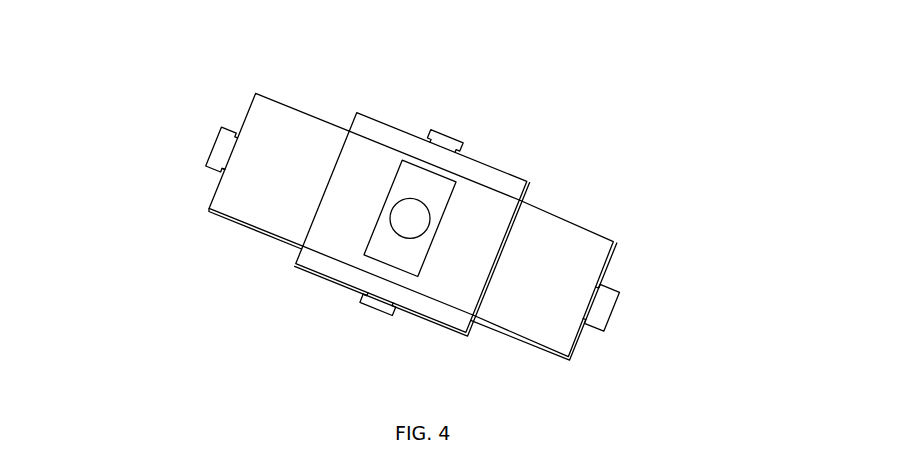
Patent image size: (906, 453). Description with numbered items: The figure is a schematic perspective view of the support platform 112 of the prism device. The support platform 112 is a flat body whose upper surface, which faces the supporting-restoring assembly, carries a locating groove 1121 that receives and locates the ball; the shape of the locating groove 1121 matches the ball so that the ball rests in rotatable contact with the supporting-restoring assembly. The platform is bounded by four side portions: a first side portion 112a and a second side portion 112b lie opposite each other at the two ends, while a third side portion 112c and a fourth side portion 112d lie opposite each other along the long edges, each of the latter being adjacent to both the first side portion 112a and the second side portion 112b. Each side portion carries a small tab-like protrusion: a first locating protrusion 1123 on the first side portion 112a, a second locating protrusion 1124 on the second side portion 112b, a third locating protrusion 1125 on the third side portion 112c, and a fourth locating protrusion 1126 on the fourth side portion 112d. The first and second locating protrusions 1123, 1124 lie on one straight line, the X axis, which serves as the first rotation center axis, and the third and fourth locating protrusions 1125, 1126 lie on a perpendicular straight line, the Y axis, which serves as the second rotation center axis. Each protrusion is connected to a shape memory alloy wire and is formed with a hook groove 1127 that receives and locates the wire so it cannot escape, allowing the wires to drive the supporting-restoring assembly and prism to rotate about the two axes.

The support platform 112 is at (458, 67).
The first side portion 112a is at (582, 333).
The second side portion 112b is at (240, 130).
The third side portion 112c is at (400, 128).
The fourth side portion 112d is at (437, 320).
The locating groove 1121 is at (410, 217).
The first locating protrusion 1123 is at (622, 297).
The second locating protrusion 1124 is at (215, 152).
The third locating protrusion 1125 is at (455, 150).
The fourth locating protrusion 1126 is at (372, 305).
The hook groove 1127 is at (217, 168).